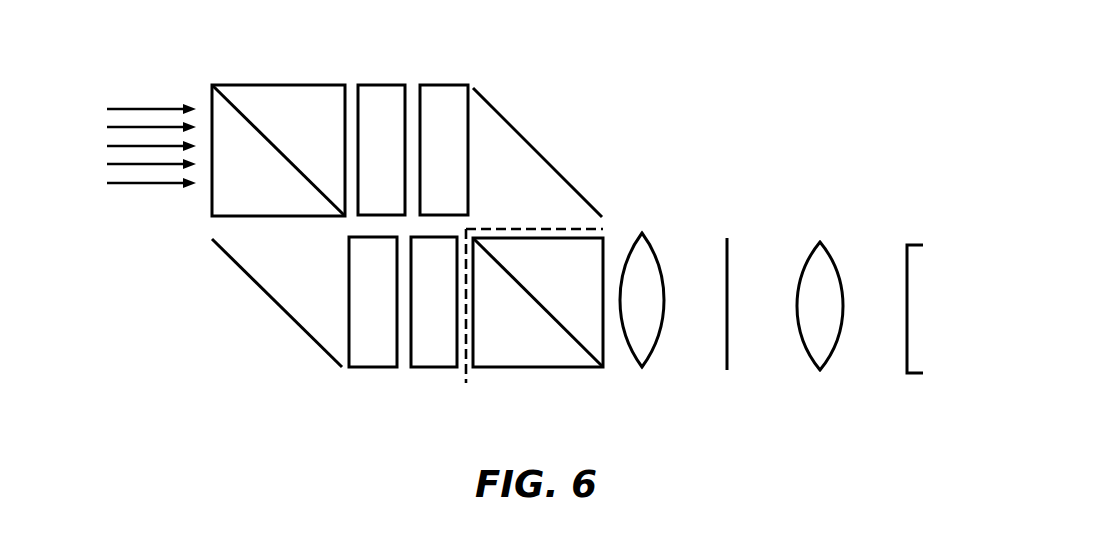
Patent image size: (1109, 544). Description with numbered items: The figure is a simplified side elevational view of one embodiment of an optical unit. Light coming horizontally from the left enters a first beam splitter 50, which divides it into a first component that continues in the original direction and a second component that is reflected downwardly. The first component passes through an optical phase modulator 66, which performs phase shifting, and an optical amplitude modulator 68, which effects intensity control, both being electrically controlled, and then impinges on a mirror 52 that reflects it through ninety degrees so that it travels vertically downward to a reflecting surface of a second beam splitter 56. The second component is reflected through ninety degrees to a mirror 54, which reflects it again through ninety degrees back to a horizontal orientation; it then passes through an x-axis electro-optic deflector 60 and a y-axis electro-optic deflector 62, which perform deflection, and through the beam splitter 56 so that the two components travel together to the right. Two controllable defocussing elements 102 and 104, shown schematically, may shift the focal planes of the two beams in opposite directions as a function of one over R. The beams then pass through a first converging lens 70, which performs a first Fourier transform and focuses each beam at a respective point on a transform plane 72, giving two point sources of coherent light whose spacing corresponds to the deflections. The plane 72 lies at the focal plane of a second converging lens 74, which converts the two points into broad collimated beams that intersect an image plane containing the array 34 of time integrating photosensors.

The first beam splitter 50 is at (287, 85).
The optical phase modulator 66 is at (381, 85).
The optical amplitude modulator 68 is at (437, 85).
The mirror 52 is at (516, 126).
The mirror 54 is at (287, 318).
The x-axis electro-optic deflector 60 is at (375, 367).
The y-axis electro-optic deflector 62 is at (438, 367).
The second beam splitter 56 is at (568, 367).
The controllable defocussing element 102 is at (558, 227).
The controllable defocussing element 104 is at (466, 383).
The first converging lens 70 is at (642, 367).
The transform plane 72 is at (724, 250).
The second converging lens 74 is at (820, 240).
The array of time integrating photosensors 34 is at (907, 245).